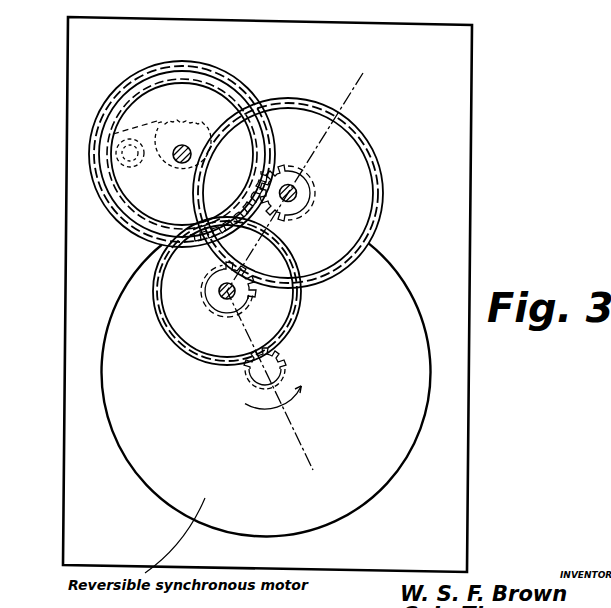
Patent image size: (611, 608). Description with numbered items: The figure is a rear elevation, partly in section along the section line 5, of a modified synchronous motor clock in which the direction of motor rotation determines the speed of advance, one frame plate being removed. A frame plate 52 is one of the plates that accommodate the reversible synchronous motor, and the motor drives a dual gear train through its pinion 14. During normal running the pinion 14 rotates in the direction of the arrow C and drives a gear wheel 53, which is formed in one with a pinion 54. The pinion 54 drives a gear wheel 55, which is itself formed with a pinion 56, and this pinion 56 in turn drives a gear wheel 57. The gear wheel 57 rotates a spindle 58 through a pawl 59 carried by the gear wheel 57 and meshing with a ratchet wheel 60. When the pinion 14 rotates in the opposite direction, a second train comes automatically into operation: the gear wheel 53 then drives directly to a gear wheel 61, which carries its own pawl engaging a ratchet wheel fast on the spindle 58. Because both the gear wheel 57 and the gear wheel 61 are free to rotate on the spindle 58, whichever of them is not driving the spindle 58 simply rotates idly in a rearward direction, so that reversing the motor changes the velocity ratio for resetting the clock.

The section line 5- 5 is at (355, 83).
The pinion 14 is at (287, 364).
The frame plate 52 is at (452, 462).
The gear wheel 53 is at (170, 337).
The pinion 54 is at (240, 296).
The gear wheel 55 is at (380, 213).
The pinion 56 is at (317, 187).
The gear wheel 57 is at (228, 78).
The spindle 58 is at (180, 160).
The pawl 59 is at (113, 134).
The ratchet wheel 60 is at (160, 178).
The gear wheel 61 is at (112, 175).
The arrow C is at (270, 408).